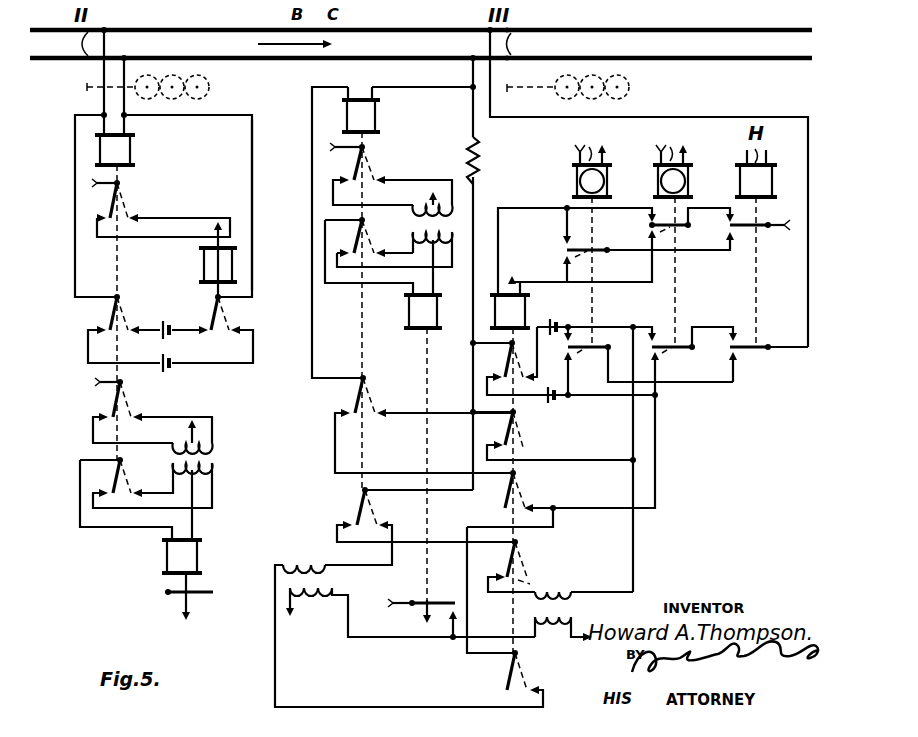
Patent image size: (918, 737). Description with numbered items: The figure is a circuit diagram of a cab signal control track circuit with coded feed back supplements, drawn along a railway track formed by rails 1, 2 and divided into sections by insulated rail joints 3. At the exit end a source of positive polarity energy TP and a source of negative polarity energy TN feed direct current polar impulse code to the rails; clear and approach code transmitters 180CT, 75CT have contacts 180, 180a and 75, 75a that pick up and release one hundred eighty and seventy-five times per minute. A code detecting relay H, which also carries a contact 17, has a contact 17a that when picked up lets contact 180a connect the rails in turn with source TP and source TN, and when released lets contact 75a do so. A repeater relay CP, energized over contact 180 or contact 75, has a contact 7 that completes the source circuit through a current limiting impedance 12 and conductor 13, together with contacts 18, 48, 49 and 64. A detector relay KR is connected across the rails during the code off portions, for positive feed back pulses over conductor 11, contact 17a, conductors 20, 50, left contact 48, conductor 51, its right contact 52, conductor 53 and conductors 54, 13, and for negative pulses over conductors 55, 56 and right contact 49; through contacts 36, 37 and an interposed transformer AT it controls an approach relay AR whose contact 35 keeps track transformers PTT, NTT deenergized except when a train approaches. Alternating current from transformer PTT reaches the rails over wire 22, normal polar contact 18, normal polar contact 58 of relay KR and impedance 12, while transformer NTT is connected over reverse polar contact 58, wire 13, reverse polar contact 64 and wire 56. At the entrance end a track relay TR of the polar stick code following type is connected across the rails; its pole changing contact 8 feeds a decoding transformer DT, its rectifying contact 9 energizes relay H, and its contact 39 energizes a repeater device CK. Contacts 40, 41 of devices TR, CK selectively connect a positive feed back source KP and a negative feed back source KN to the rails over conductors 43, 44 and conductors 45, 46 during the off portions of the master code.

The track rail 1 is at (253, 28).
The track rail 2 is at (270, 63).
The insulated rail joints 3 is at (290, 44).
The contact of repeater relay CP 7 is at (503, 360).
The pole changing contact of track relay TR 8 is at (110, 402).
The rectifying contact of track relay TR 9 is at (112, 478).
The conductor 11 is at (492, 106).
The current limiting impedance 12 is at (479, 165).
The conductor 13 is at (472, 74).
The contact 17 is at (752, 227).
The contact of code detecting relay H 17a is at (756, 344).
The normal polar contact of relay CP 18 is at (506, 560).
The conductor 20 is at (633, 430).
The wire 22 is at (538, 576).
The contact of approach relay AR 35 is at (414, 608).
The contact of detector relay KR 36 is at (354, 165).
The contact of detector relay KR 37 is at (356, 238).
The contact of track relay TR 39 is at (113, 200).
The contact of track relay TR 40 is at (108, 313).
The right contact of repeater device CK 41 is at (222, 315).
The conductor 43 is at (75, 200).
The conductor 44 is at (102, 107).
The conductor 45 is at (126, 107).
The conductor 46 is at (252, 152).
The left contact of relay CP 48 is at (506, 429).
The right contact of relay CP 49 is at (505, 501).
The conductor 50 is at (574, 461).
The conductor 51 is at (418, 411).
The right contact of relay KR 52 is at (355, 402).
The conductor 53 is at (312, 333).
The conductor 54 is at (398, 86).
The conductor 55 is at (433, 473).
The conductor 56 is at (597, 508).
The polar contact of relay KR 58 is at (358, 510).
The reverse polar contact of relay CP 64 is at (506, 673).
The contact of approach code transmitter 75CT 75 is at (566, 251).
The contact of approach code transmitter 75CT 75a is at (648, 361).
The contact of clear code transmitter 180CT 180 is at (650, 226).
The contact of clear code transmitter 180CT 180a is at (692, 355).
The track relay TR is at (130, 152).
The repeater device for track relay CK is at (204, 262).
The source of negative polarity feed back energy KN is at (165, 315).
The source of positive polarity feed back energy KP is at (165, 379).
The decoding transformer DT is at (212, 455).
The code detecting relay H is at (166, 559).
The detector relay KR is at (379, 114).
The interposed transformer AT is at (412, 226).
The approach relay AR is at (409, 313).
The track transformer NTT is at (405, 621).
The track transformer PTT is at (533, 610).
The source of positive polarity energy TP is at (571, 429).
The source of negative polarity energy TN is at (551, 412).
The code repeater relay CP is at (523, 272).
The approach code transmitter 75CT is at (586, 235).
The clear code transmitter 180CT is at (670, 235).